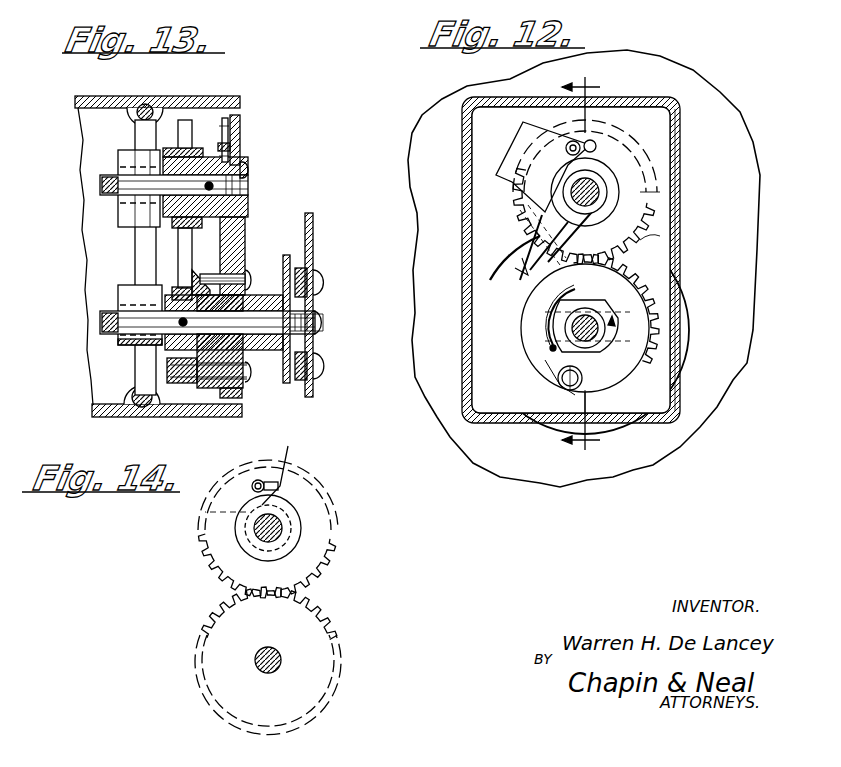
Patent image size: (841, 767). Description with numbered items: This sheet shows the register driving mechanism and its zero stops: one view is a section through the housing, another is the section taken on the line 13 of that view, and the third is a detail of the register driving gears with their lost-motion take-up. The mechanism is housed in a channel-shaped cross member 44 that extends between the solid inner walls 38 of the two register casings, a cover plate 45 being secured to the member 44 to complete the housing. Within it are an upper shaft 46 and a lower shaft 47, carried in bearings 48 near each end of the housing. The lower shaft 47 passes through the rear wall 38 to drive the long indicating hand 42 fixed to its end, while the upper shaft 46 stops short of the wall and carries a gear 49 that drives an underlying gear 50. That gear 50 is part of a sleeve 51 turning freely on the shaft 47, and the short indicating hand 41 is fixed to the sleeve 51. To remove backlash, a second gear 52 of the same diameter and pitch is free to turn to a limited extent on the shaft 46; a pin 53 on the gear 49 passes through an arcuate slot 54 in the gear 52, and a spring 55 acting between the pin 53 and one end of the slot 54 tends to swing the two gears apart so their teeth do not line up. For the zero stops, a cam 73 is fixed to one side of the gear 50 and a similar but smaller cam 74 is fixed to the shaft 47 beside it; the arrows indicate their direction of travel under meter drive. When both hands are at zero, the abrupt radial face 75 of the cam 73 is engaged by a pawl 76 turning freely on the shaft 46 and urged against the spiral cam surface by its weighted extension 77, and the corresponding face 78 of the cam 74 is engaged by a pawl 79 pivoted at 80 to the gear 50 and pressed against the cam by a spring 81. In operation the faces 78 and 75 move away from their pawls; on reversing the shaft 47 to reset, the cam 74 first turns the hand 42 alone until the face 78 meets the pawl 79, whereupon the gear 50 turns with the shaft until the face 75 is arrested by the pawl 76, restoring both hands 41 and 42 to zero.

In FIG. 12, the section line 13— 13 is at (581, 263).
In FIG. 12, the inner wall 38 is at (735, 318).
In FIG. 13, the indicating hand 41 is at (298, 381).
In FIG. 13, the indicating hand 42 is at (313, 232).
In FIG. 13, the cross member 44 is at (180, 96).
In FIG. 12, the cross member 44 is at (462, 140).
In FIG. 12, the cover plate 45 is at (672, 160).
In FIG. 13, the upper shaft 46 is at (100, 186).
In FIG. 12, the upper shaft 46 is at (592, 202).
In FIG. 14, the upper shaft 46 is at (273, 540).
In FIG. 13, the lower shaft 47 is at (100, 322).
In FIG. 12, the lower shaft 47 is at (611, 297).
In FIG. 14, the lower shaft 47 is at (278, 665).
In FIG. 13, the bearings 48 is at (130, 213).
In FIG. 13, the gear 49 is at (241, 135).
In FIG. 12, the gear 49 is at (640, 240).
In FIG. 14, the gear 49 is at (310, 486).
In FIG. 13, the gear 50 is at (236, 398).
In FIG. 12, the gear 50 is at (625, 300).
In FIG. 14, the gear 50 is at (308, 632).
In FIG. 13, the sleeve 51 is at (261, 300).
In FIG. 13, the second gear 52 is at (228, 125).
In FIG. 12, the second gear 52 is at (648, 197).
In FIG. 14, the second gear 52 is at (315, 508).
In FIG. 13, the pin 53 is at (240, 147).
In FIG. 12, the pin 53 is at (554, 155).
In FIG. 14, the pin 53 is at (255, 484).
In FIG. 12, the arcuate slot 54 is at (595, 147).
In FIG. 14, the arcuate slot 54 is at (287, 469).
In FIG. 13, the spring 55 is at (248, 168).
In FIG. 14, the spring 55 is at (205, 511).
In FIG. 13, the cam 73 is at (226, 398).
In FIG. 12, the cam 73 is at (500, 360).
In FIG. 13, the cam 74 is at (175, 291).
In FIG. 12, the cam 74 is at (612, 338).
In FIG. 12, the abrupt radial face 75 is at (545, 251).
In FIG. 13, the pawl 76 is at (183, 259).
In FIG. 12, the pawl 76 is at (512, 254).
In FIG. 12, the weighted extension 77 is at (500, 178).
In FIG. 12, the face 78 is at (611, 381).
In FIG. 13, the pawl 79 is at (183, 392).
In FIG. 12, the pawl 79 is at (600, 392).
In FIG. 13, the pivot 80 is at (170, 372).
In FIG. 12, the pivot 80 is at (560, 392).
In FIG. 12, the spring 81 is at (540, 340).